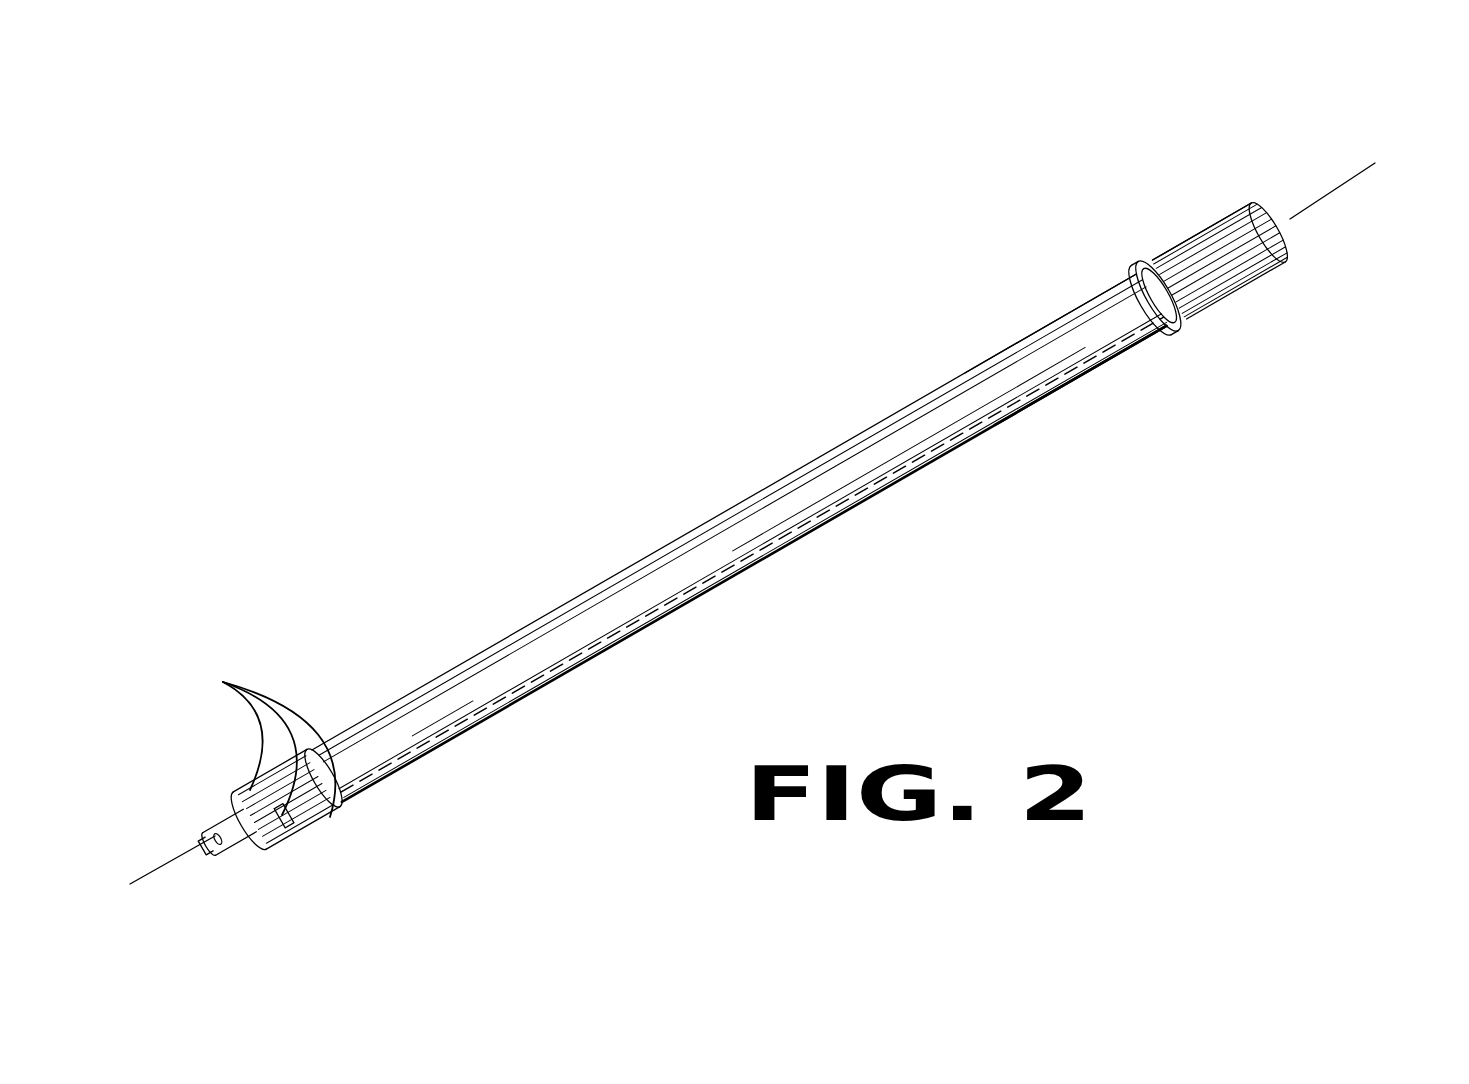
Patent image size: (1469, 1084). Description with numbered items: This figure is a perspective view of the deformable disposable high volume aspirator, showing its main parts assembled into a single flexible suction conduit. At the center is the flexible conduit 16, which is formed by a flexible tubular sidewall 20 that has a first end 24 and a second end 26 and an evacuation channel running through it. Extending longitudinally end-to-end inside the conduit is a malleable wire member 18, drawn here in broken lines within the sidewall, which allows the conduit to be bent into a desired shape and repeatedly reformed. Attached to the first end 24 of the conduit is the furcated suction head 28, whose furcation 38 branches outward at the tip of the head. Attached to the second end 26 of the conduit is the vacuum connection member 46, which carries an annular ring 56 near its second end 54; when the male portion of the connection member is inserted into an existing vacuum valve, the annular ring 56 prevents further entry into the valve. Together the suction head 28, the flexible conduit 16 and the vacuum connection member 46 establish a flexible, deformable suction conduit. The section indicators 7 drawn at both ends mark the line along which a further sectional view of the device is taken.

The section view indicator 7 is at (200, 878).
The flexible conduit 16 is at (893, 425).
The wire member 18 is at (870, 485).
The sidewall of flexible conduit 20 is at (668, 572).
The first end of flexible conduit 24 is at (357, 735).
The second end of flexible conduit 26 is at (1110, 292).
The furcated suction head 28 is at (310, 827).
The furcation 38 is at (225, 683).
The vacuum connection member 46 is at (1240, 292).
The second end of vacuum connection member 54 is at (1232, 215).
The annular ring 56 is at (1143, 268).